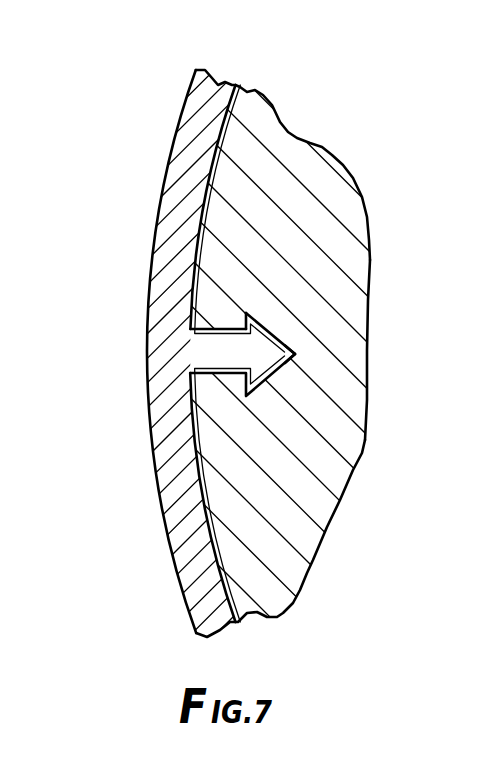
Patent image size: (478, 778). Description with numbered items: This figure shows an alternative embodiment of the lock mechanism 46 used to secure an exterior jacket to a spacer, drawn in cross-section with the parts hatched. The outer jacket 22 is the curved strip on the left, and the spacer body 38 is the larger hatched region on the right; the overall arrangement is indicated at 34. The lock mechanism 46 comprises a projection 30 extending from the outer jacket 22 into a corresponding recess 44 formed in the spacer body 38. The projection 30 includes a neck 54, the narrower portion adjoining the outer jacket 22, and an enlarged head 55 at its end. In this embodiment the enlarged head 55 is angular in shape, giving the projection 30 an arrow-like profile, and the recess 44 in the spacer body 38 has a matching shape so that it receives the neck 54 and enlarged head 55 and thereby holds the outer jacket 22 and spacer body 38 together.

The outer jacket 22 is at (190, 182).
The projection 30 is at (237, 350).
The assembly 34 is at (385, 317).
The spacer body 38 is at (352, 257).
The recess 44 is at (297, 352).
The lock mechanism 46 is at (248, 290).
The neck 54 is at (220, 329).
The enlarged head 55 is at (281, 342).